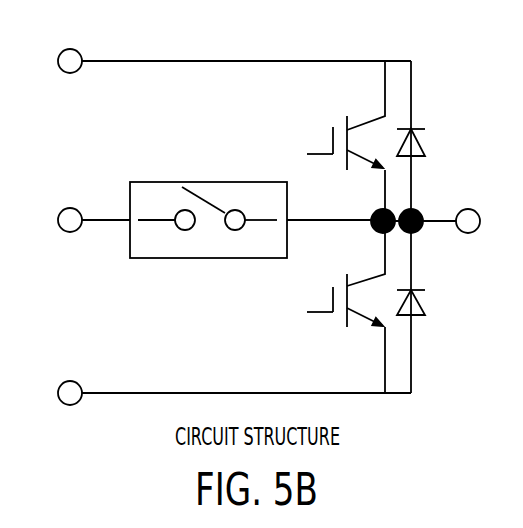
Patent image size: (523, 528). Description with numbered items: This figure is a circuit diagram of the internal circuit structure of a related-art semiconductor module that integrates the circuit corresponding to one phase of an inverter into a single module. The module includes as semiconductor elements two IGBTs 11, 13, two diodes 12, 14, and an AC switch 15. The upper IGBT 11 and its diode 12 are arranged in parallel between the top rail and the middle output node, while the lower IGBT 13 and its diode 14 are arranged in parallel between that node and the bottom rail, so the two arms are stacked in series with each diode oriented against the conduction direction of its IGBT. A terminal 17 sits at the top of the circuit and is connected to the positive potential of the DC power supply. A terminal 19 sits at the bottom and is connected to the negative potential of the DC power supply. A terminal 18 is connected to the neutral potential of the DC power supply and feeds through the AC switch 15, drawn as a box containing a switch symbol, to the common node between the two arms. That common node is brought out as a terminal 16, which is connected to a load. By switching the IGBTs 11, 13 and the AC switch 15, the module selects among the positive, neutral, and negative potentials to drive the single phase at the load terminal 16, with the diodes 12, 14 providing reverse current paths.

The IGBT 11 is at (322, 153).
The diode 12 is at (412, 129).
The IGBT 13 is at (322, 313).
The diode 14 is at (416, 316).
The AC switch 15 is at (207, 258).
The E1C2 terminal 16 is at (470, 208).
The C1 terminal 17 is at (68, 73).
The M terminal 18 is at (66, 232).
The E2 terminal 19 is at (68, 405).